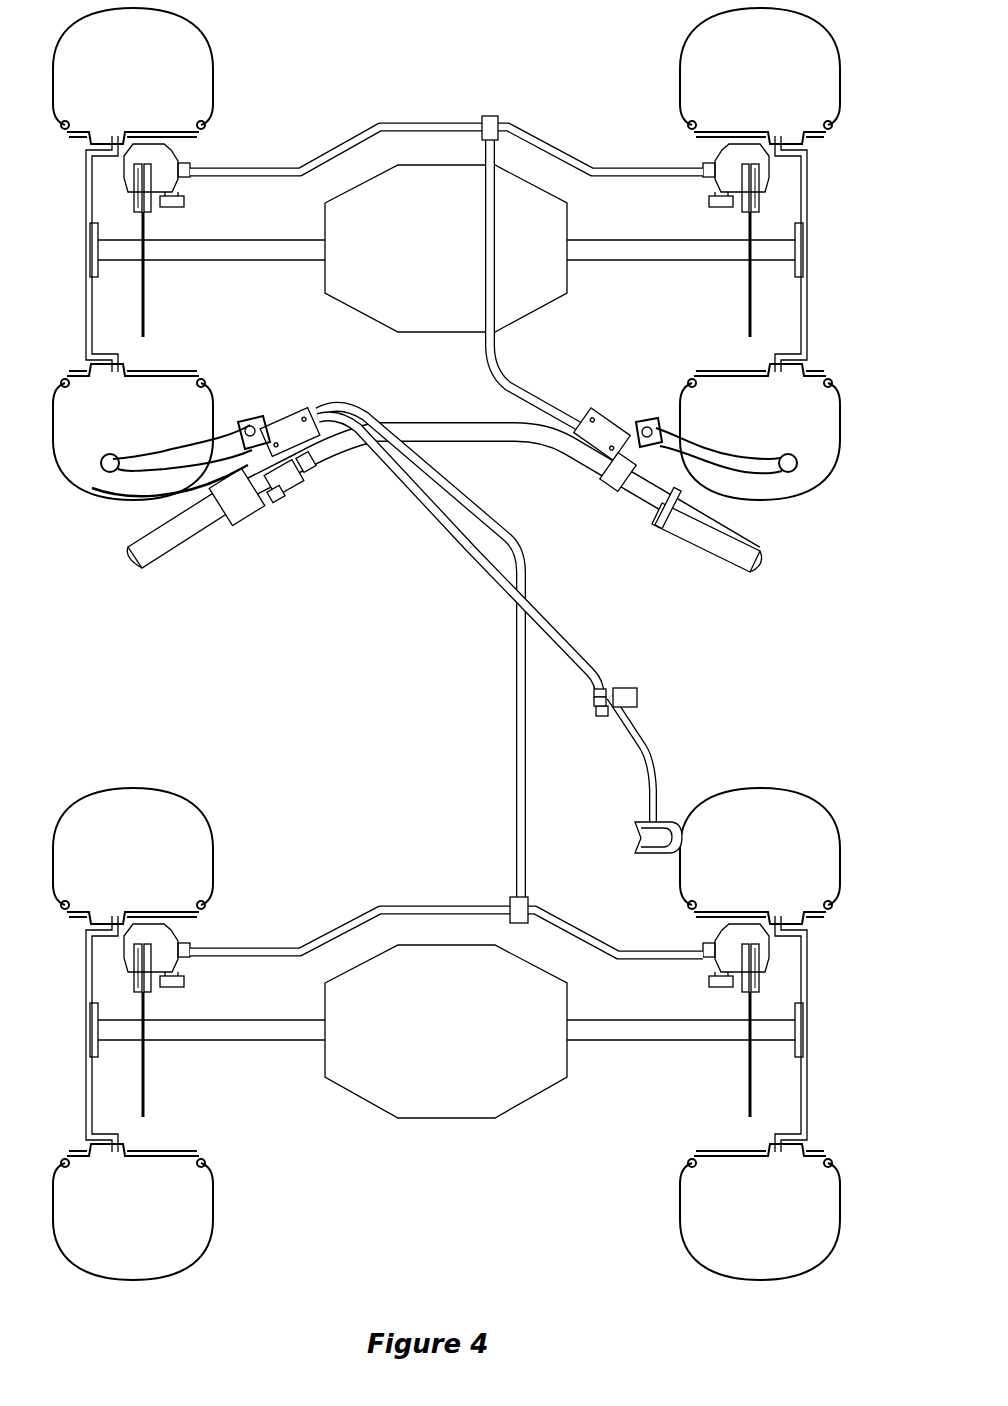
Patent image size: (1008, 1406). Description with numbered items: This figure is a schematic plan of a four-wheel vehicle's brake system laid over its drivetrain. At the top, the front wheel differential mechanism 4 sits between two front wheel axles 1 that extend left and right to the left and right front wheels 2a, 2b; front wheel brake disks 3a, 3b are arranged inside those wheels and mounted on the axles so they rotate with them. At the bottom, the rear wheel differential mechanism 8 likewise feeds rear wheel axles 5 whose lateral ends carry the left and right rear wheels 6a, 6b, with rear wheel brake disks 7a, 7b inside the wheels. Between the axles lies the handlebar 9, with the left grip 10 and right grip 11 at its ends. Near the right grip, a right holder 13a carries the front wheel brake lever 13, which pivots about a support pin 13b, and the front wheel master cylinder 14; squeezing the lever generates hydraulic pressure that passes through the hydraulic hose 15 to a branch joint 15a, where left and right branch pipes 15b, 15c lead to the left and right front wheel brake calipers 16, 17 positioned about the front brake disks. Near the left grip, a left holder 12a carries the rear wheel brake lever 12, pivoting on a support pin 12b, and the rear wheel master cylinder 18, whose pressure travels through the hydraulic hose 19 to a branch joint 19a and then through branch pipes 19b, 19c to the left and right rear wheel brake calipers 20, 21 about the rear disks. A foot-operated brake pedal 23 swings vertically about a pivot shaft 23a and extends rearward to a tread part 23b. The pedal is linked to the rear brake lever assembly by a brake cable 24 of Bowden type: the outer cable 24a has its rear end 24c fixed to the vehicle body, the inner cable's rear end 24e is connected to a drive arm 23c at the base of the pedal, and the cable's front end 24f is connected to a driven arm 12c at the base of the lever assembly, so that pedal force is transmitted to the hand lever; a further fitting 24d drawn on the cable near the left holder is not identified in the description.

The front wheel axle 1 is at (240, 262).
The left front wheel 2a is at (66, 465).
The right front wheel 2b is at (838, 450).
The front wheel brake disk 3a is at (146, 322).
The front wheel brake disk 3b is at (748, 322).
The front wheel differential mechanism 4 is at (382, 315).
The rear wheel axle 5 is at (258, 1042).
The left rear wheel 6a is at (115, 787).
The right rear wheel 6b is at (780, 788).
The rear wheel brake disk 7a is at (146, 1095).
The rear wheel brake disk 7b is at (748, 1095).
The rear wheel differential mechanism 8 is at (440, 1119).
The handlebar 9 is at (505, 445).
The left grip 10 is at (176, 540).
The right grip 11 is at (712, 553).
The rear wheel brake lever 12 is at (153, 455).
The left holder 12a is at (292, 490).
The support pin 12b is at (250, 421).
The driven arm 12c is at (175, 497).
The front wheel brake lever 13 is at (739, 455).
The right holder 13a is at (613, 490).
The support pin 13b is at (648, 424).
The front wheel master cylinder 14 is at (606, 417).
The hydraulic hose 15 is at (497, 354).
The branch joint 15a is at (490, 115).
The left branch pipe 15b is at (328, 157).
The right branch pipe 15c is at (590, 160).
The left front wheel brake caliper 16 is at (176, 155).
The right front wheel brake caliper 17 is at (717, 152).
The rear wheel master cylinder 18 is at (284, 414).
The hydraulic hose 19 is at (515, 720).
The branch joint 19a is at (510, 905).
The left branch pipe 19b is at (347, 908).
The right branch pipe 19c is at (598, 940).
The left rear wheel brake caliper 20 is at (178, 968).
The right rear wheel brake caliper 21 is at (705, 962).
The brake pedal 23 is at (655, 737).
The pivot shaft 23a is at (637, 692).
The tread part 23b is at (666, 812).
The drive arm 23c is at (602, 718).
The brake cable 24 is at (478, 572).
The outer cable 24a is at (560, 624).
The rear end of outer cable 24c is at (596, 690).
The brake line fitting at master cylinder 24d is at (311, 468).
The rear end of inner cable 24e is at (597, 708).
The front end of cable 24f is at (276, 500).